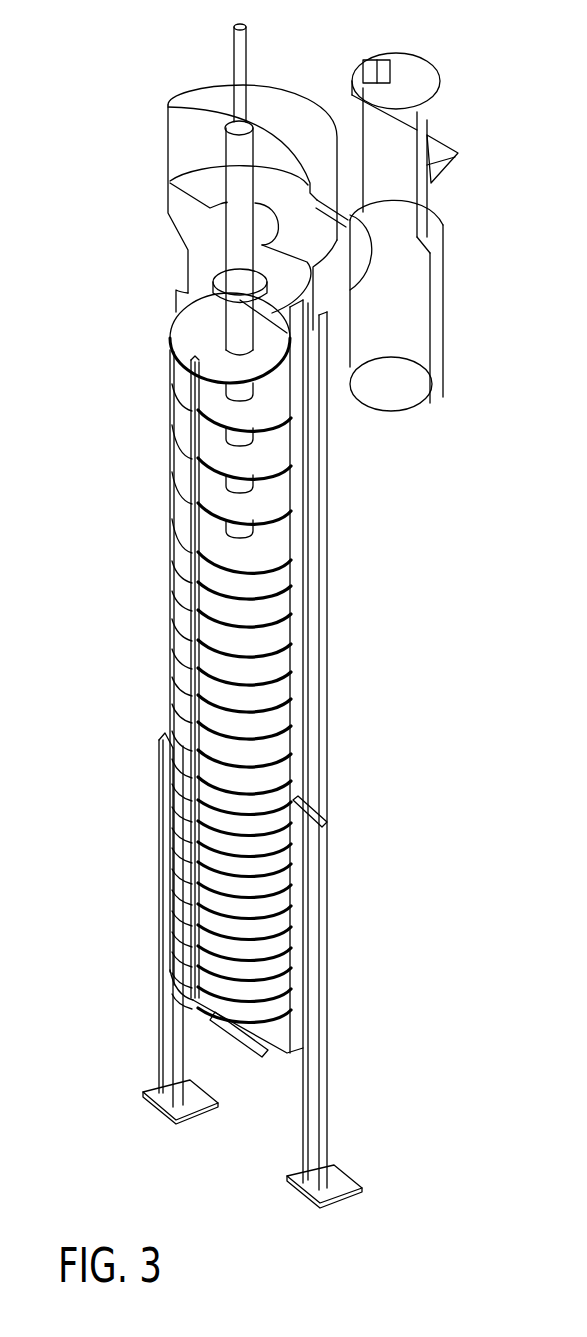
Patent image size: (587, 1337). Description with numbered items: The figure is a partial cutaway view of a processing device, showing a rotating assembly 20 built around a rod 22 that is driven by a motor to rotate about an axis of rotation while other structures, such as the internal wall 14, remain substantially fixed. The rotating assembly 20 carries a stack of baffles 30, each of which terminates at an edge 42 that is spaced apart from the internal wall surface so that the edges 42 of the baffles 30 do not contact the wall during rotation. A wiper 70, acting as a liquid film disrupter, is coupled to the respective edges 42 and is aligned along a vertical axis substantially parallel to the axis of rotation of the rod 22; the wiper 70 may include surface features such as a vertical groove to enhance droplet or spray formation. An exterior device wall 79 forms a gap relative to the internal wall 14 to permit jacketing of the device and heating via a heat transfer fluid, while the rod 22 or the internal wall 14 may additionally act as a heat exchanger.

The internal wall 14 is at (318, 667).
The rotating assembly 20 is at (128, 376).
The rod 22 is at (237, 332).
The baffle 30 is at (180, 470).
The edge 42 is at (173, 490).
The wiper 70 is at (180, 519).
The exterior device wall 79 is at (305, 737).